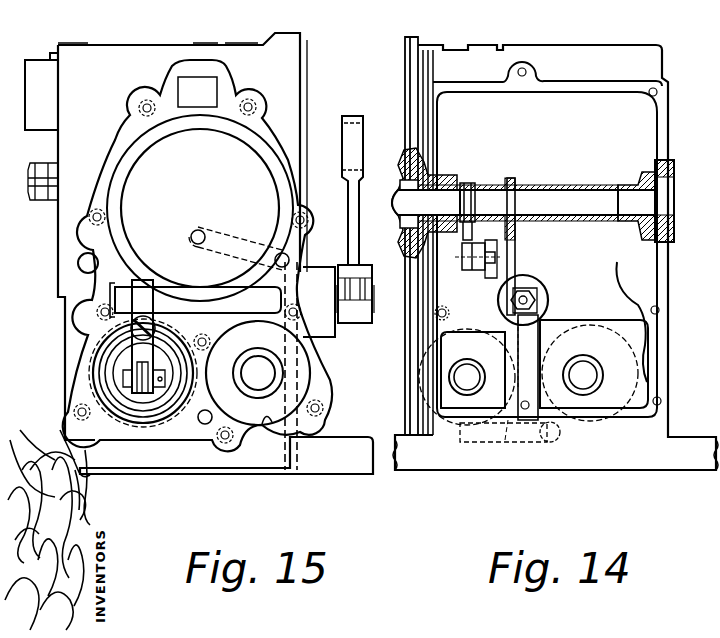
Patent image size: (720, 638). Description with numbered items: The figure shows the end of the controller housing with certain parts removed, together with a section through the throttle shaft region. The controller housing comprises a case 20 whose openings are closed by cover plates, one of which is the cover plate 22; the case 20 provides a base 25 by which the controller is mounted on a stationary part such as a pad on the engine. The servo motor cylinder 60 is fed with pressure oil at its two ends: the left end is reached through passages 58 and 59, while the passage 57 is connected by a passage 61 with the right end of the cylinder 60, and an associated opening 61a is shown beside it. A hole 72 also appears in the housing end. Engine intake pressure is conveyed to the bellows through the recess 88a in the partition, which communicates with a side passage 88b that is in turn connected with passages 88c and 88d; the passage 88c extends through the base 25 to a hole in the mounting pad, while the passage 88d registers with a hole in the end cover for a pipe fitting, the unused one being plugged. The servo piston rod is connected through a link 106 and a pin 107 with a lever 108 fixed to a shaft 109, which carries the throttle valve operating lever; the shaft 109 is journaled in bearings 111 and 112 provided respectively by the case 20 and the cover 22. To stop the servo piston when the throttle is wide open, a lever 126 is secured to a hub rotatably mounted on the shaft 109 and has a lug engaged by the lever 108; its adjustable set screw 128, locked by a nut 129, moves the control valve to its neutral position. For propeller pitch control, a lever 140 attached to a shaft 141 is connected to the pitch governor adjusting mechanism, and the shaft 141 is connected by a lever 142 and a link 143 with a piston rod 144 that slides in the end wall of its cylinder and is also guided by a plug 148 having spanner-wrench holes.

In FIG. 15, the case 20 is at (297, 100).
In FIG. 14, the case 20 is at (669, 134).
In FIG. 14, the cover plate 22 is at (410, 77).
In FIG. 15, the base 25 is at (228, 475).
In FIG. 14, the passage 57 is at (545, 357).
In FIG. 15, the passage 58 is at (203, 426).
In FIG. 15, the passage 59 is at (218, 396).
In FIG. 15, the cylinder 60 is at (266, 425).
In FIG. 14, the passage 61 is at (505, 440).
In FIG. 14, the slot 61a is at (548, 442).
In FIG. 15, the hole 72 is at (78, 266).
In FIG. 15, the recess 88a is at (200, 230).
In FIG. 15, the side passage 88b is at (233, 238).
In FIG. 15, the passage 88c is at (300, 370).
In FIG. 15, the passage 88d is at (289, 258).
In FIG. 14, the link 106 is at (486, 274).
In FIG. 14, the pin 107 is at (515, 258).
In FIG. 14, the lever 108 is at (467, 183).
In FIG. 14, the shaft 109 is at (548, 193).
In FIG. 14, the bearing 111 is at (620, 183).
In FIG. 14, the bearing 112 is at (468, 262).
In FIG. 14, the lever 126 is at (534, 285).
In FIG. 14, the screw 128 is at (535, 298).
In FIG. 14, the nut 129 is at (538, 311).
In FIG. 15, the lever 140 is at (356, 116).
In FIG. 15, the shaft 141 is at (192, 290).
In FIG. 15, the lever 142 is at (143, 287).
In FIG. 15, the link 143 is at (146, 396).
In FIG. 15, the piston rod 144 is at (166, 362).
In FIG. 15, the plug 148 is at (112, 345).